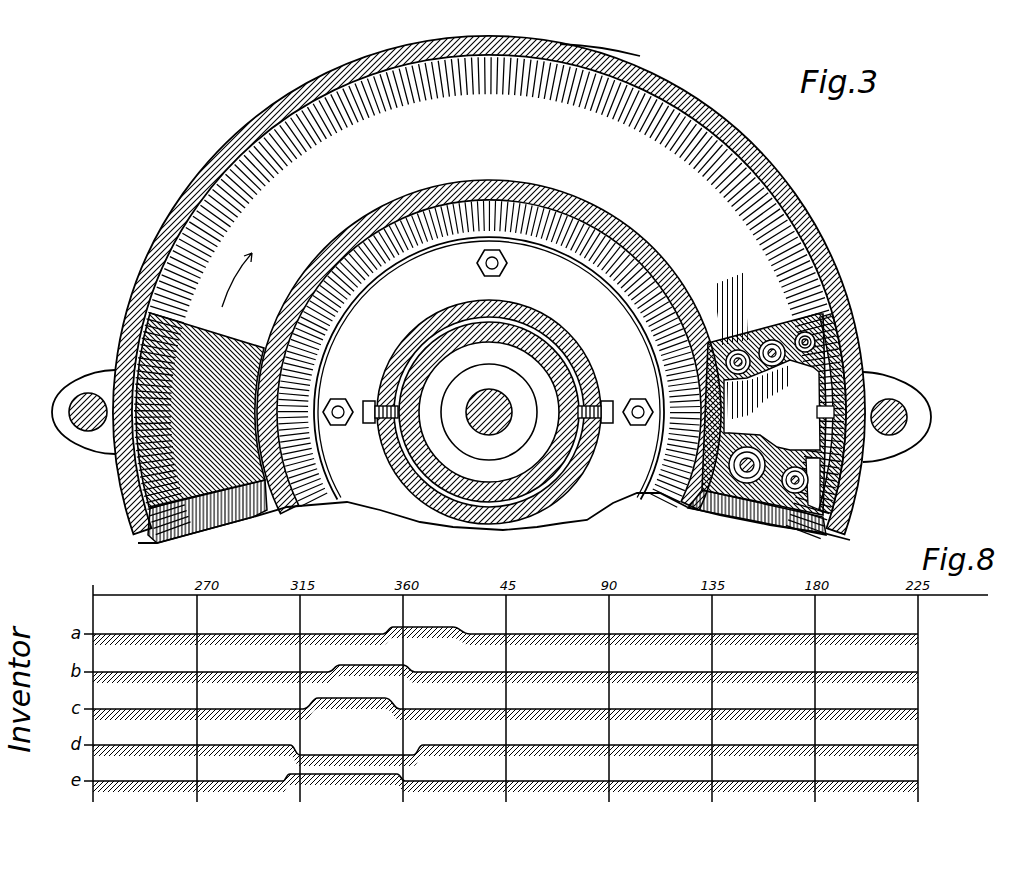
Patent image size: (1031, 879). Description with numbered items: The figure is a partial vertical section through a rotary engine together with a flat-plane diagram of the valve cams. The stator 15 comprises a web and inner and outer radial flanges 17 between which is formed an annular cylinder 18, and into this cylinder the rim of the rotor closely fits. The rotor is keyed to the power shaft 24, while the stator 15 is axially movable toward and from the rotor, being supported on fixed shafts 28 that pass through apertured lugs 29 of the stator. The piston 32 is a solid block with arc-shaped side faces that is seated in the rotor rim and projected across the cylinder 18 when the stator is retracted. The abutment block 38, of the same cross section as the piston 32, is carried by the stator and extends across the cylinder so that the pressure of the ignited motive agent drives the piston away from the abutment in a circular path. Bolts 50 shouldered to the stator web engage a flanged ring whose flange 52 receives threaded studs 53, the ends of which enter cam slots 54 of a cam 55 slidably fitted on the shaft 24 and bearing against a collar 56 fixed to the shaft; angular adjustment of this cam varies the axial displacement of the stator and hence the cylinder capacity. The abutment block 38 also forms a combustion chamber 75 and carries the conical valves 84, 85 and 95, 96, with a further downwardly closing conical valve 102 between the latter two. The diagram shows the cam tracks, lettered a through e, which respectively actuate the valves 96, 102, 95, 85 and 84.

The stator 15 is at (790, 178).
The radial flanges 17 is at (566, 187).
The annular cylinder 18 is at (592, 63).
The power shaft 24 is at (505, 403).
The fixed shafts 28 is at (87, 398).
The apertured lugs 29 is at (84, 444).
The piston 32 is at (233, 336).
The abutment block 38 is at (770, 338).
The bolts 50 is at (479, 268).
The flange 52 is at (512, 338).
The threaded studs 53 is at (614, 404).
The cam slots 54 is at (489, 320).
The cam 55 is at (673, 277).
The collar 56 is at (460, 442).
The combustion chamber 75 is at (764, 414).
The conical valve 84 is at (786, 500).
The conical valve 85 is at (743, 480).
The conical valve 95 is at (828, 312).
The conical valve 96 is at (734, 338).
The conical valve 102 is at (790, 316).